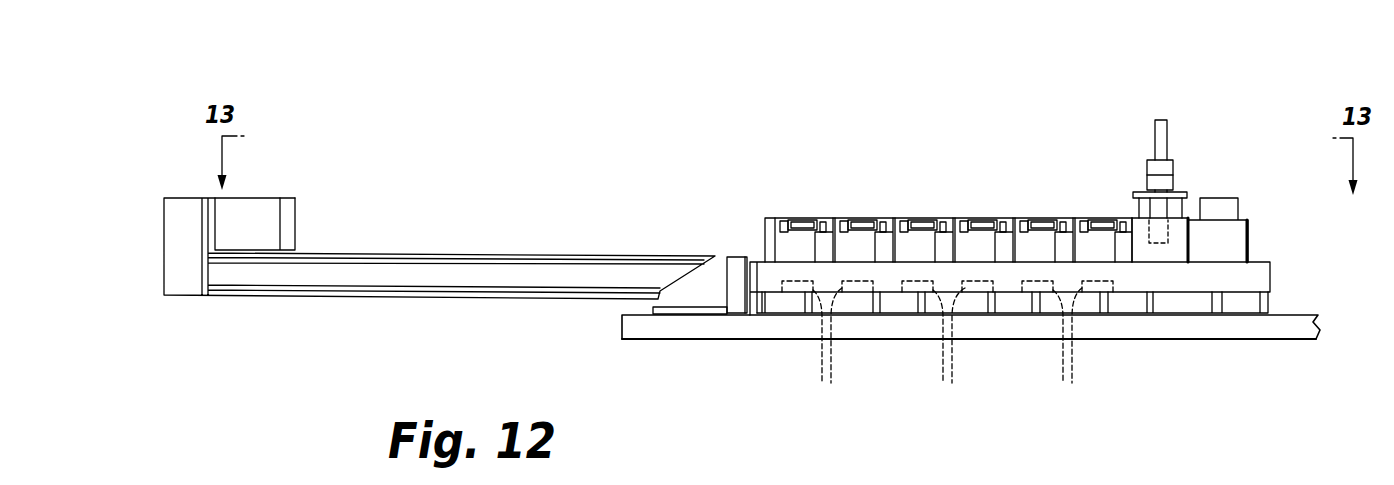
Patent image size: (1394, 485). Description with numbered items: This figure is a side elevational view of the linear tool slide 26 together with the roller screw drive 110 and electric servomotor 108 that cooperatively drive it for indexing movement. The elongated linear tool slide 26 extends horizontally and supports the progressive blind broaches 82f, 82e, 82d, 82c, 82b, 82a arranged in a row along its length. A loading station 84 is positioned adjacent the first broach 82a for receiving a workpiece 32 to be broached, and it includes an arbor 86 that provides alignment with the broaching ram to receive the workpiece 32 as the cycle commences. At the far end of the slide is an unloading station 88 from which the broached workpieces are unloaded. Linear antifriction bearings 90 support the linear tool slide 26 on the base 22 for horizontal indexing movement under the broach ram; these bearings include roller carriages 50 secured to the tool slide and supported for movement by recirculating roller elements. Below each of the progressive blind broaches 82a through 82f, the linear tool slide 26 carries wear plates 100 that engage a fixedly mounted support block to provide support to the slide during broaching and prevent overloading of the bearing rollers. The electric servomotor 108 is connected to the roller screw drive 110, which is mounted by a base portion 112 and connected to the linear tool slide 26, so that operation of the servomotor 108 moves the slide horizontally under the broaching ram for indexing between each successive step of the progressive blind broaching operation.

The base 22 is at (669, 328).
The linear tool slide 26 is at (1122, 180).
The workpiece 32 is at (1175, 180).
The roller carriages 50 is at (781, 308).
The progressive blind broach 82a is at (1104, 218).
The progressive blind broach 82b is at (1046, 218).
The progressive blind broach 82c is at (982, 218).
The progressive blind broach 82d is at (924, 218).
The progressive blind broach 82e is at (866, 218).
The progressive blind broach 82f is at (802, 218).
The loading station 84 is at (1185, 208).
The arbor 86 is at (1167, 125).
The unloading station 88 is at (1240, 208).
The linear antifriction bearings 90 is at (1280, 303).
The wear plates 100 is at (947, 348).
The electric servomotor 108 is at (263, 203).
The roller screw drive 110 is at (440, 275).
The base portion 112 is at (737, 265).